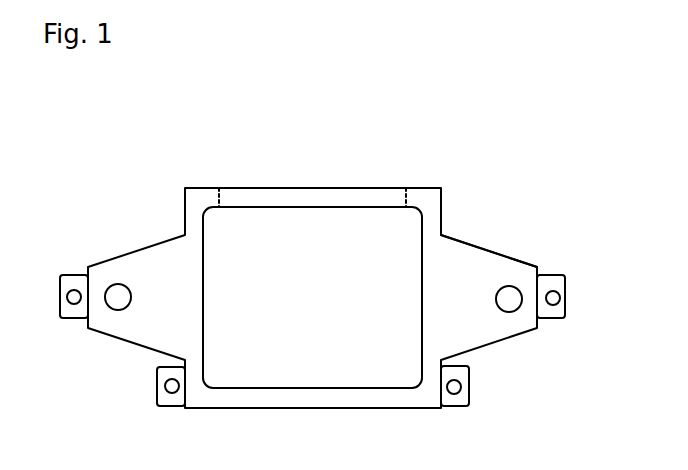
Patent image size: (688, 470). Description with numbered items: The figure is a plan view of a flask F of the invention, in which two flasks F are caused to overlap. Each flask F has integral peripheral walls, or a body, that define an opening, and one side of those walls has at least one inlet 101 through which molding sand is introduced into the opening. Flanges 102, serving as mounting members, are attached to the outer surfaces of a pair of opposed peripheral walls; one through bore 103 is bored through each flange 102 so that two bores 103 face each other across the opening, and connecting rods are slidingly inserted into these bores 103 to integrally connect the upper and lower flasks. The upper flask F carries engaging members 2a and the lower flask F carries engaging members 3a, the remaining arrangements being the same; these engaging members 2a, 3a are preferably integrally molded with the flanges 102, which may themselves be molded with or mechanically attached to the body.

The flask F is at (443, 198).
The inlet 101 is at (342, 195).
The flange 102 is at (503, 257).
The bore 103 is at (108, 285).
The engaging member 2a is at (65, 275).
The engaging member 3a is at (157, 393).